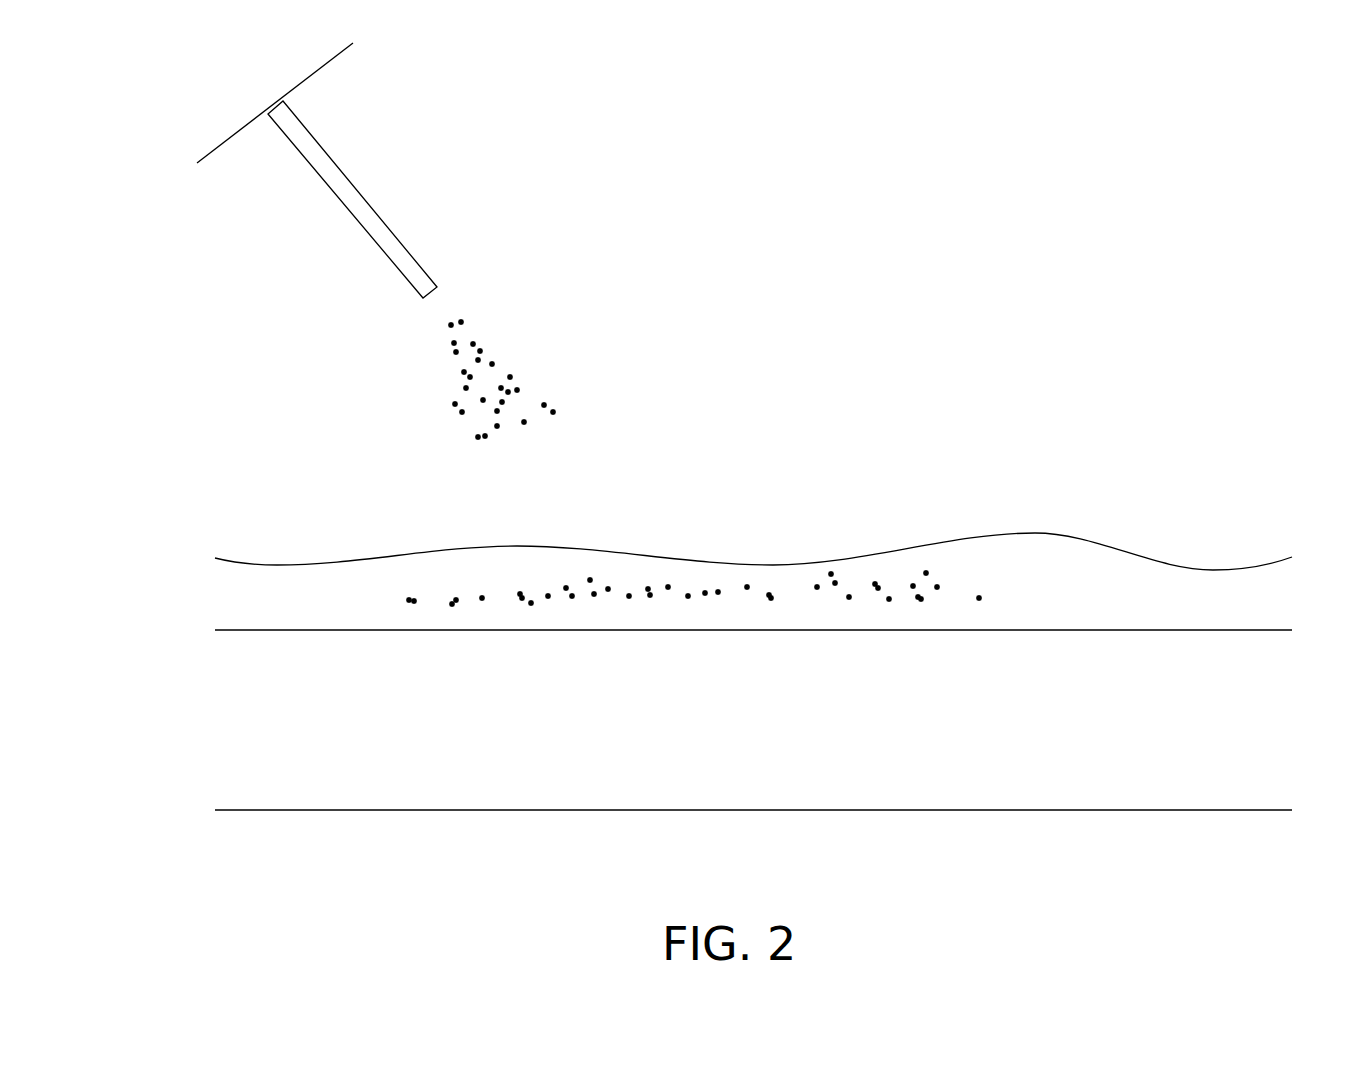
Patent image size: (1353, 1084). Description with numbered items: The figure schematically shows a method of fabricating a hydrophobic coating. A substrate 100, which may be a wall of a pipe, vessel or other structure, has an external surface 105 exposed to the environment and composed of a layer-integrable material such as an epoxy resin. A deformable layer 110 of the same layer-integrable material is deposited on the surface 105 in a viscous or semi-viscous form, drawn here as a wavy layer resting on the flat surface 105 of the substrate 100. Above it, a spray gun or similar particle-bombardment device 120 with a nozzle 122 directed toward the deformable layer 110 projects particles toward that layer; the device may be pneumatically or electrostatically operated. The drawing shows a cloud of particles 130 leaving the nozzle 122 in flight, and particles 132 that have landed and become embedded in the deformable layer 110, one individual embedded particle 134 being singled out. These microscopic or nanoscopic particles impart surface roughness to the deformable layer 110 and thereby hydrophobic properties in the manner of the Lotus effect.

The substrate 100 is at (1128, 713).
The external surface of the substrate 105 is at (322, 633).
The deformable layer 110 is at (977, 535).
The particle-bombardment device 120 is at (230, 137).
The nozzle 122 is at (390, 229).
The dispensed particles 130 is at (518, 379).
The particles in layer 132 is at (744, 583).
The particle 134 is at (887, 597).